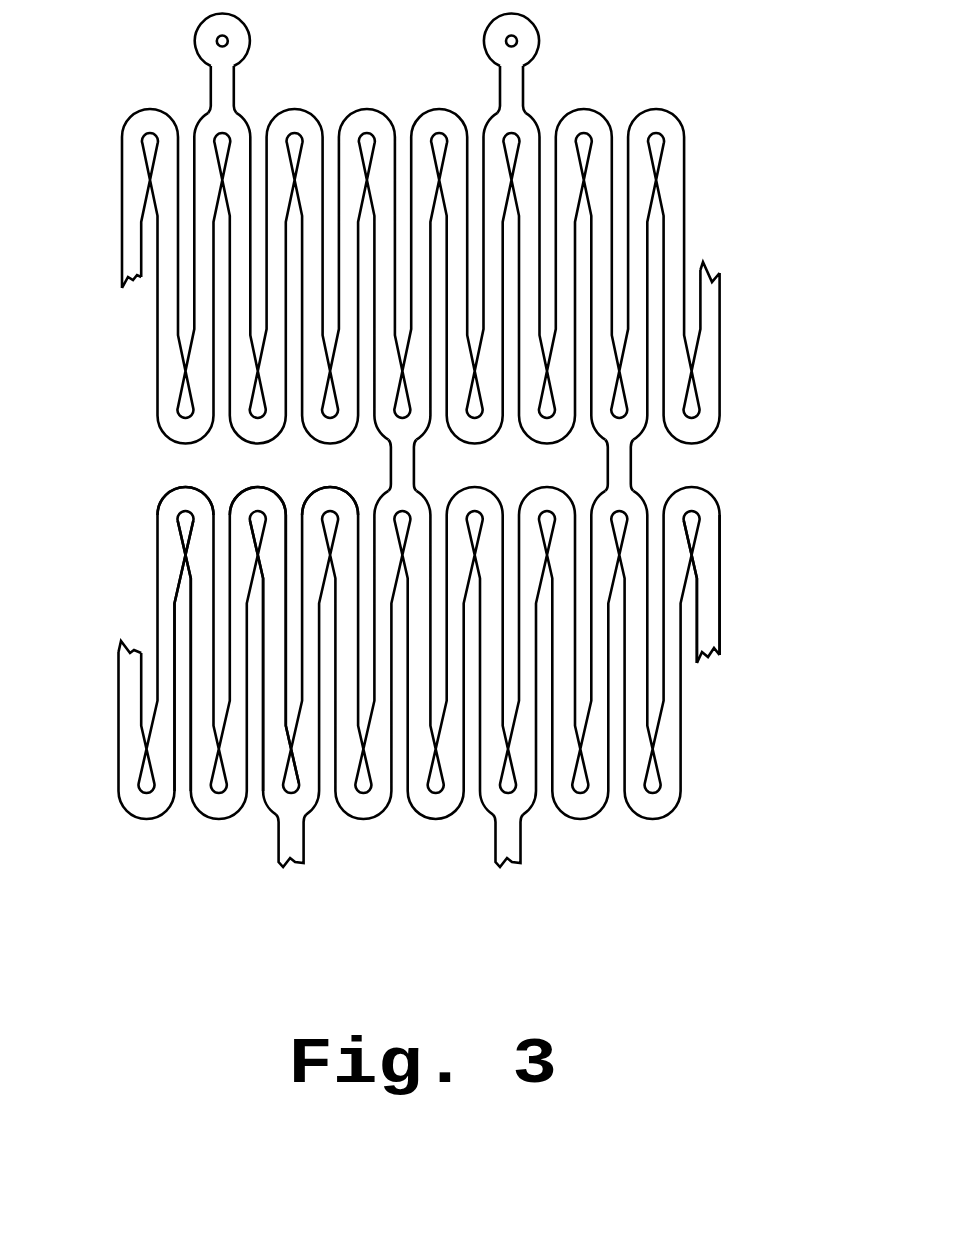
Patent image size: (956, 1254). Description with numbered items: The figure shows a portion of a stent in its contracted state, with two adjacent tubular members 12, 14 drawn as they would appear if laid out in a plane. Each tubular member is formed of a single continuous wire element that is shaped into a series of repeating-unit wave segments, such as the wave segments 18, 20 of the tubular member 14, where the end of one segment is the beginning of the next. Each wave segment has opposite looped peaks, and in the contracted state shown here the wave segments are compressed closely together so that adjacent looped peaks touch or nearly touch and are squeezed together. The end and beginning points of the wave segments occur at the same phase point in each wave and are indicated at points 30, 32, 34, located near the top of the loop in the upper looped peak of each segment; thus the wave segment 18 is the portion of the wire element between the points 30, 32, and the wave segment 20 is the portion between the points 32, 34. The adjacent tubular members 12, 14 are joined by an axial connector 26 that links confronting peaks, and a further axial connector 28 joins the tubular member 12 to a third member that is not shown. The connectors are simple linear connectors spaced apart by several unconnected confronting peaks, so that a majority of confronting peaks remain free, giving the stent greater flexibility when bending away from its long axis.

The tubular member 12 is at (485, 229).
The tubular member 14 is at (434, 634).
The wave segment 18 is at (705, 530).
The wave segment 20 is at (270, 575).
The axial connector 26 is at (400, 467).
The axial connector 28 is at (220, 87).
The end/beginning point 30 is at (163, 507).
The end/beginning point 32 is at (233, 502).
The end/beginning point 34 is at (320, 500).